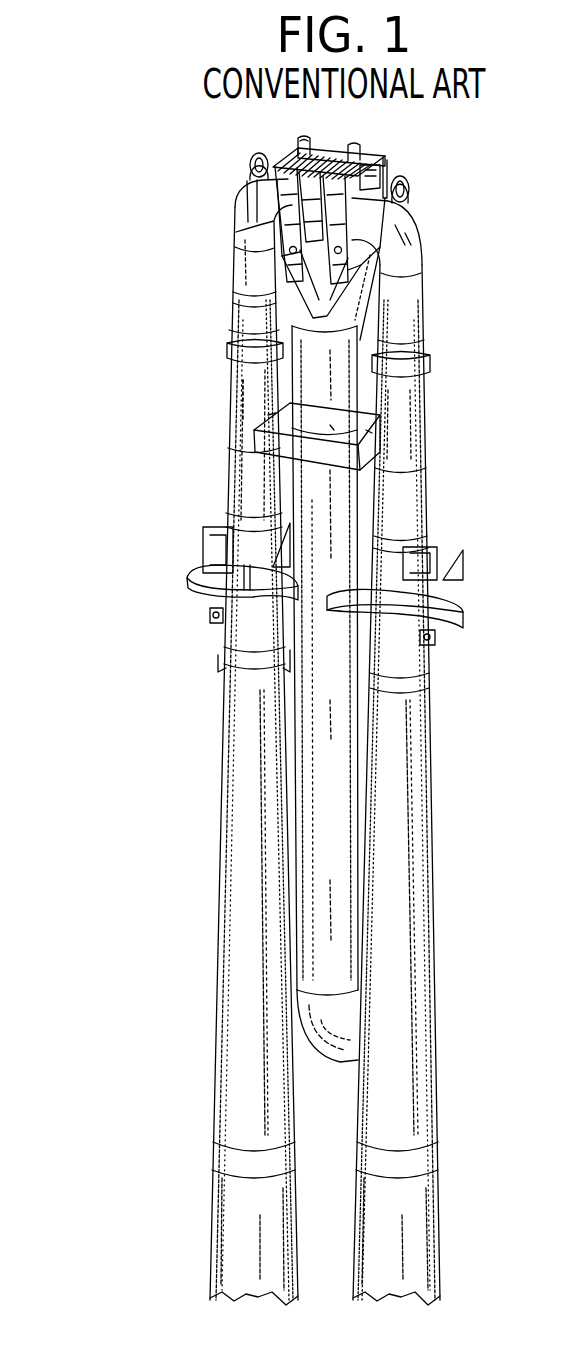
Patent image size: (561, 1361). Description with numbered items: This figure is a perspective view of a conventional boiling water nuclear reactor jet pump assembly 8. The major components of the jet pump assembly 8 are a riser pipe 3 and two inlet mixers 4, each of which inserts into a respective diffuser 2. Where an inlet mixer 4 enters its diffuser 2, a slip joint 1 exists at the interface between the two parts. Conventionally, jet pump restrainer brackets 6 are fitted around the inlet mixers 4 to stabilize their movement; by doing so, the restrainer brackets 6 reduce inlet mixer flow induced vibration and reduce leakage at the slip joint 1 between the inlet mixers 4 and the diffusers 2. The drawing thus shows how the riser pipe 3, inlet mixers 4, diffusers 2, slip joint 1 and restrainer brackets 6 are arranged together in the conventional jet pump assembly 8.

The slip joint 1 is at (405, 697).
The diffuser 2 is at (403, 797).
The riser pipe 3 is at (317, 777).
The inlet mixer 4 is at (400, 436).
The jet pump restrainer bracket 6 is at (470, 532).
The jet pump assembly 8 is at (178, 197).